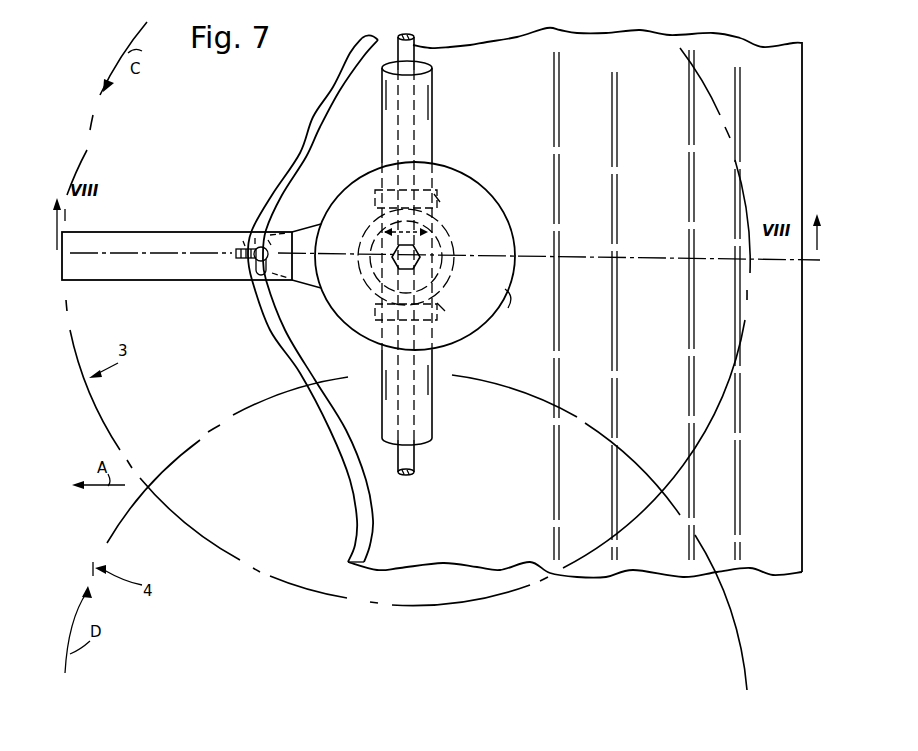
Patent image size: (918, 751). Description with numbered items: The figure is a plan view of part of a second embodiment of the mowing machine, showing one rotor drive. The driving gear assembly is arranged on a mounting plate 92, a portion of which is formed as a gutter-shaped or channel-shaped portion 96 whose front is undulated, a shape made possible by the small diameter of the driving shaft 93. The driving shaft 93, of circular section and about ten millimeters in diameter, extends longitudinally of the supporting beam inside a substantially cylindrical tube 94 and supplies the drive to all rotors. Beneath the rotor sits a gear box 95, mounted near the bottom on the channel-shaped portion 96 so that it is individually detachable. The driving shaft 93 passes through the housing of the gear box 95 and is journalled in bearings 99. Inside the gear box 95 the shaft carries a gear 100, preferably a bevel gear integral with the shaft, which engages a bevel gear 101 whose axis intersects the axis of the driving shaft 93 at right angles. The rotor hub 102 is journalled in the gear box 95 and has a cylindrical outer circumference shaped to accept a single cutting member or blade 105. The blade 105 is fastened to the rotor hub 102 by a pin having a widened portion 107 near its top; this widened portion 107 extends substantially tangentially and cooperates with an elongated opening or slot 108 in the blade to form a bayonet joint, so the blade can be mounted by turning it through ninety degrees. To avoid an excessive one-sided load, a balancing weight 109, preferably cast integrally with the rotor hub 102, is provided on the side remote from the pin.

The mounting plate 92 is at (335, 421).
The driving shaft 93 is at (416, 44).
The cylindrical tube 94 is at (433, 113).
The gear box 95 is at (460, 239).
The channel-shaped portion 96 is at (533, 558).
The bearings 99 is at (445, 198).
The gear 100 is at (363, 228).
The bevel gear 101 is at (355, 276).
The rotor hub 102 is at (360, 183).
The cutting member or blade 105 is at (190, 222).
The widened portion 107 is at (248, 283).
The elongated opening or slot 108 is at (233, 262).
The weight 109 is at (512, 301).